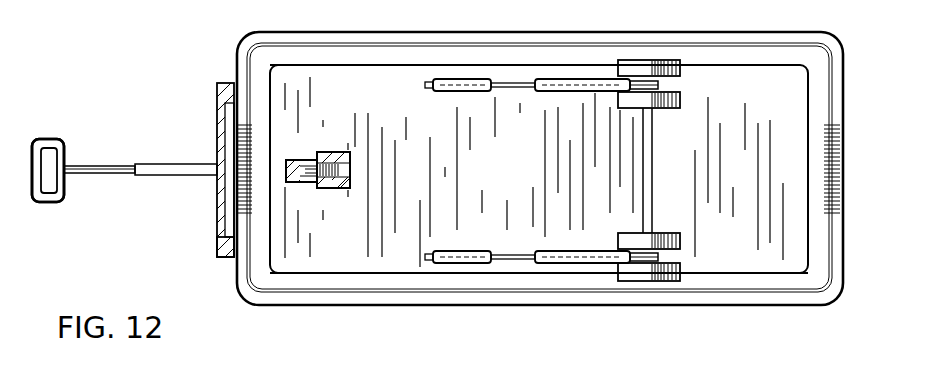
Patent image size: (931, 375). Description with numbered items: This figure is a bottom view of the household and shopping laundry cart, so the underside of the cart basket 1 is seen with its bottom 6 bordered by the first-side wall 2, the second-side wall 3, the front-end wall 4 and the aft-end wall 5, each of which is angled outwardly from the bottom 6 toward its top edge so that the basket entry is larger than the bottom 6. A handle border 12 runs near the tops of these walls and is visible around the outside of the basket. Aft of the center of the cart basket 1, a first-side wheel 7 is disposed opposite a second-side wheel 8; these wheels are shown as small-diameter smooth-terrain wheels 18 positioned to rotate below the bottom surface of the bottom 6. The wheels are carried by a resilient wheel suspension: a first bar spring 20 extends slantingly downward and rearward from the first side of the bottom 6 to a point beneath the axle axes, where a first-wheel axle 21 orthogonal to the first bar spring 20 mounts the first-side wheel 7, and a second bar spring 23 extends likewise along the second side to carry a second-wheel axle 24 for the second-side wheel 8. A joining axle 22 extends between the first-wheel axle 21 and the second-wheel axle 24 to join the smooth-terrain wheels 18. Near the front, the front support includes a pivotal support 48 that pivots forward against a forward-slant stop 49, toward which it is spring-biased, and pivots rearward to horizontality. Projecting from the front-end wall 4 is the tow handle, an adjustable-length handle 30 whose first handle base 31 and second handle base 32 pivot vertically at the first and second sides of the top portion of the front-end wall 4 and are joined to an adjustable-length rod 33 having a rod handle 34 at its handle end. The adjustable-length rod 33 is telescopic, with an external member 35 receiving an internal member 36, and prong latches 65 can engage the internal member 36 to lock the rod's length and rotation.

The cart basket 1 is at (856, 106).
The first-side wall 2 is at (306, 284).
The second-side wall 3 is at (552, 60).
The front-end wall 4 is at (263, 192).
The aft-end wall 5 is at (815, 165).
The bottom 6 is at (482, 181).
The first-side wheel 7 is at (680, 246).
The second-side wheel 8 is at (680, 92).
The handle border 12 is at (347, 296).
The smooth-terrain wheels 18 is at (650, 57).
The first bar spring 20 is at (518, 261).
The first-wheel axle 21 is at (618, 277).
The joining axle 22 is at (654, 165).
The second bar spring 23 is at (508, 82).
The second-wheel axle 24 is at (628, 72).
The adjustable-length handle 30 is at (55, 223).
The first handle base 31 is at (218, 250).
The second handle base 32 is at (223, 84).
The adjustable-length rod 33 is at (120, 222).
The rod handle 34 is at (52, 139).
The external member 35 is at (170, 165).
The internal member 36 is at (106, 167).
The pivotal support 48 is at (329, 158).
The forward-slant stop 49 is at (291, 163).
The prong latches 65 is at (576, 261).